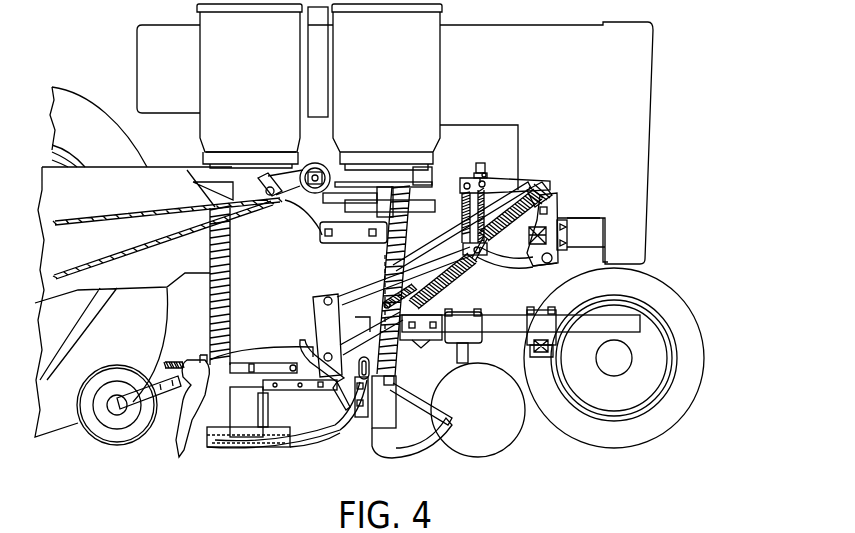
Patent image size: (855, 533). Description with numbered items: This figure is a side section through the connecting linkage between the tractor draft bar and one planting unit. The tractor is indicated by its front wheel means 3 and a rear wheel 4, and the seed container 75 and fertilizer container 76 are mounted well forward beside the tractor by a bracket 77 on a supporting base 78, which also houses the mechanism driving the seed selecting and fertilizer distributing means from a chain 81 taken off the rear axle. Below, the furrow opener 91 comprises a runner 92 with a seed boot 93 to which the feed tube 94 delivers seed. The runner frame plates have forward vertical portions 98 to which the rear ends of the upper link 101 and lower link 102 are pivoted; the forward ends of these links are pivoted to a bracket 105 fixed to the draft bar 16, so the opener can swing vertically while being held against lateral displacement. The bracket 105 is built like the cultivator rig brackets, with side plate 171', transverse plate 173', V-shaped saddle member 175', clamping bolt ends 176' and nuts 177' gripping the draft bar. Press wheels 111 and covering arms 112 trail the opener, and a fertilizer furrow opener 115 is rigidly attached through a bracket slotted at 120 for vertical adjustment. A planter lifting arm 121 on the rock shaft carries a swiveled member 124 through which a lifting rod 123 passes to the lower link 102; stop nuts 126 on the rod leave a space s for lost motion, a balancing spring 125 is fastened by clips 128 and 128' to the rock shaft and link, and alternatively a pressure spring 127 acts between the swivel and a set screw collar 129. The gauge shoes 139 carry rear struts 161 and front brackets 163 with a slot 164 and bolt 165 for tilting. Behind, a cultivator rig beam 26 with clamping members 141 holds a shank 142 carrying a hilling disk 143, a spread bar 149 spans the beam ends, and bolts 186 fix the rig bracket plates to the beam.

The front wheel means 3 is at (688, 326).
The rear wheels 4 is at (80, 112).
The draft bar 16 is at (546, 228).
The cultivator rig beams 26 is at (500, 327).
The seed container 75 is at (189, 52).
The fertilizer container 76 is at (455, 64).
The bracket 77 is at (296, 216).
The supporting base 78 is at (260, 160).
The chain 81 is at (149, 210).
The furrow opener 91 is at (294, 468).
The runner 92 is at (272, 451).
The seed boot 93 is at (220, 430).
The feed tube 94 is at (222, 296).
The forward vertical portions 98 is at (315, 311).
The upper link 101 is at (348, 293).
The lower link 102 is at (370, 327).
The bracket 105 is at (568, 204).
The press wheels 111 is at (139, 428).
The covering arms 112 is at (181, 450).
The fertilizer furrow opener 115 is at (395, 451).
The slot 120 is at (361, 414).
The planter lifting arm 121 is at (508, 184).
The lifting rod 123 is at (480, 162).
The swiveled member 124 is at (485, 201).
The spring 125 is at (553, 232).
The stop nuts 126 is at (474, 173).
The spring 127 is at (460, 206).
The clip 128 is at (408, 284).
The clip 128' is at (558, 177).
The set screw collar 129 is at (475, 281).
The runner shoes 139 is at (319, 447).
The clamping members 141 is at (481, 322).
The shank 142 is at (470, 352).
The hilling disk 143 is at (489, 441).
The spread bar 149 is at (564, 337).
The struts 161 is at (262, 408).
The brackets 163 is at (333, 446).
The slot 164 is at (318, 396).
The bolt 165 is at (305, 350).
The side plate 171' is at (582, 237).
The transverse plate 173' is at (625, 237).
The saddle member 175' is at (569, 261).
The clamping bolt ends 176' is at (596, 209).
The nuts 177' is at (518, 270).
The bolts 186 is at (420, 344).
The space s is at (486, 176).